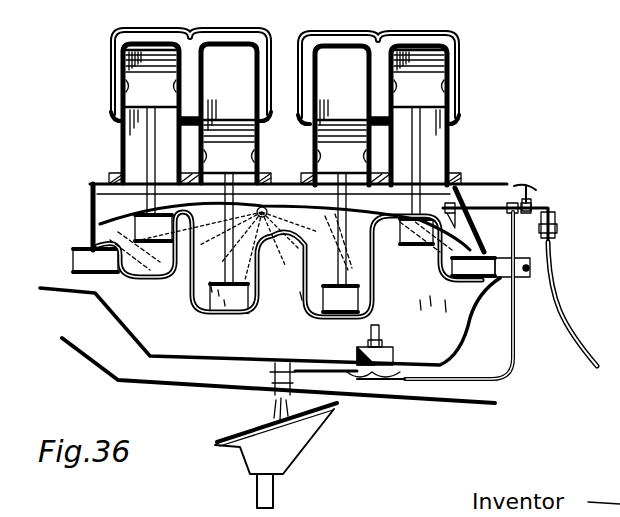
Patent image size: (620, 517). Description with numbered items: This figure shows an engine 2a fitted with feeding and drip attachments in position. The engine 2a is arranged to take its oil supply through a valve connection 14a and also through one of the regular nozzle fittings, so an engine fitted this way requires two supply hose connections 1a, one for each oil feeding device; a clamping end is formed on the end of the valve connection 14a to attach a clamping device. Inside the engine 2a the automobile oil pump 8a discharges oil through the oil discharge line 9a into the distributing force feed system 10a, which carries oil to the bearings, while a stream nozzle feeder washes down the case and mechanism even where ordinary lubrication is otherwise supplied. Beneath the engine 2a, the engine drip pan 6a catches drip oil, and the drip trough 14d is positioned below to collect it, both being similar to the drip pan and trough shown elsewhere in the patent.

The engine 2a is at (256, 213).
The distributing force feed system 10a is at (376, 231).
The valve connection 14a is at (530, 196).
The engine drip pan 6a is at (556, 236).
The supply hose connection 1a is at (572, 322).
The oil discharge line 9a is at (513, 358).
The automobile oil pump 8a is at (360, 354).
The drip trough 14d is at (302, 444).